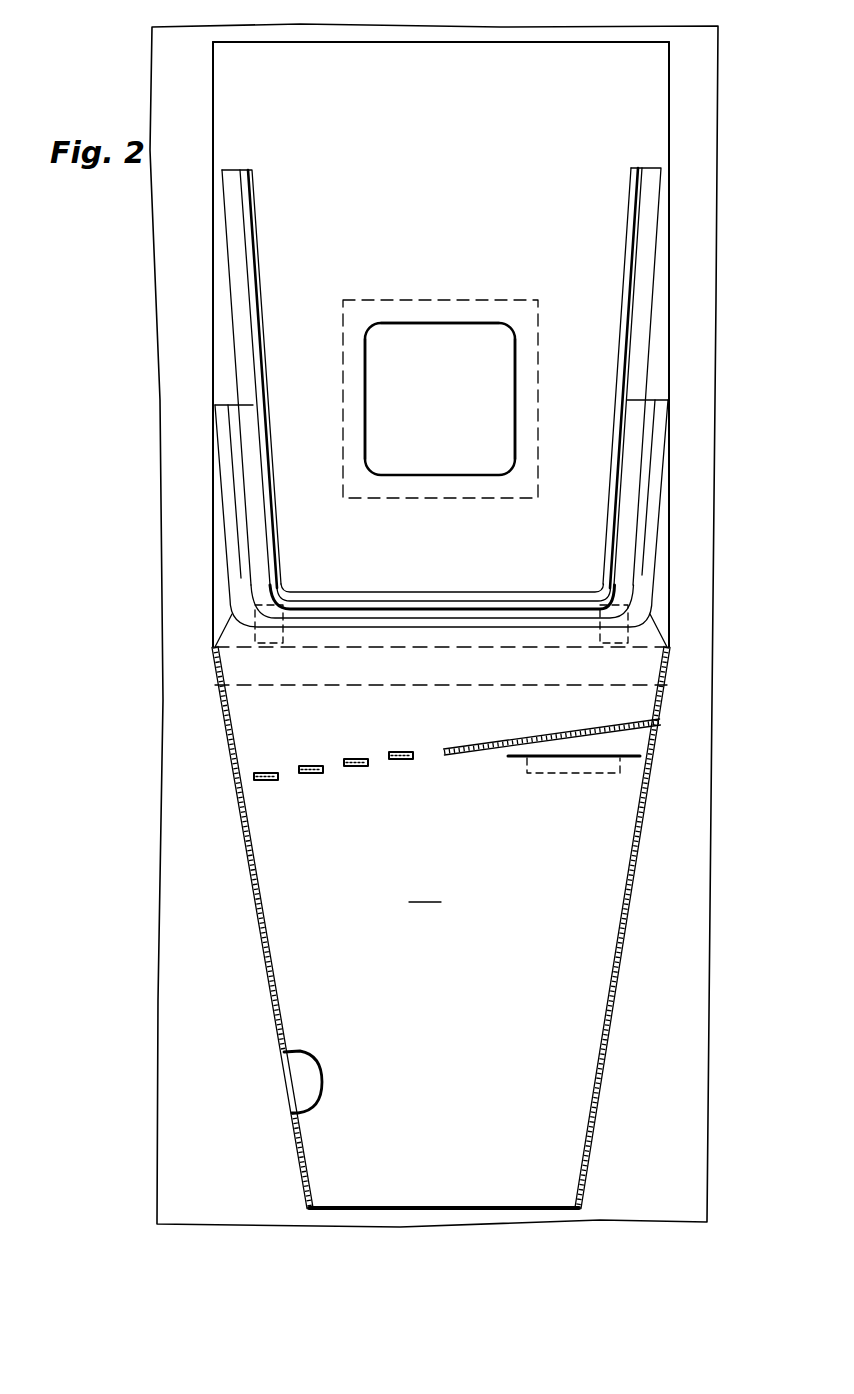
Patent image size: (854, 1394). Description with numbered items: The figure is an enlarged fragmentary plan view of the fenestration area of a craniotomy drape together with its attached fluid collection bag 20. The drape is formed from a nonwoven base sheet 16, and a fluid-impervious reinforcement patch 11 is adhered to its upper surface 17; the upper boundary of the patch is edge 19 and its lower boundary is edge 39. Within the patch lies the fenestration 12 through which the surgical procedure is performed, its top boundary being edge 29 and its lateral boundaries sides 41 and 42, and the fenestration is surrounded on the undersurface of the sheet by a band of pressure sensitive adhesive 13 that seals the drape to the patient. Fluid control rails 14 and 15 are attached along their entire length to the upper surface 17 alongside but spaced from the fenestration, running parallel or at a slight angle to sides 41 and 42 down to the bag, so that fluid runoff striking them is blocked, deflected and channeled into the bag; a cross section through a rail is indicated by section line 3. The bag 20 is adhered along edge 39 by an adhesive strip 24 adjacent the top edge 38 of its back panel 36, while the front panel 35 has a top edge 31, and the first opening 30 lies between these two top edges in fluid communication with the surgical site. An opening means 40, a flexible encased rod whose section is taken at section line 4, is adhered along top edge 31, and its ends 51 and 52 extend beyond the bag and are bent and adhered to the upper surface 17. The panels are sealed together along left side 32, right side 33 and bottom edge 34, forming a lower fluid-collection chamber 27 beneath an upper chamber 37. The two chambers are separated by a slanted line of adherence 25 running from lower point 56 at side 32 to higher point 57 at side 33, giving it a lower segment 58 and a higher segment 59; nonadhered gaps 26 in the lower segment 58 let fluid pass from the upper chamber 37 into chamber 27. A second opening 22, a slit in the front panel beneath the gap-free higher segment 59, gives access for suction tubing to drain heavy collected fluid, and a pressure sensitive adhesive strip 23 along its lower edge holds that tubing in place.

The section line 3- 3 is at (182, 232).
The section line 4- 4 is at (357, 585).
The reinforcement patch 11 is at (645, 108).
The fenestration 12 is at (481, 338).
The pressure sensitive adhesive 13 is at (393, 305).
The fluid control rail 14 is at (258, 278).
The fluid control rail 15 is at (629, 214).
The base sheet 16 is at (683, 1156).
The upper surface 17 is at (594, 96).
The edge 19 is at (320, 42).
The fluid collection bag 20 is at (456, 932).
The second opening 22 is at (520, 762).
The pressure sensitive adhesive strip 23 is at (585, 775).
The adhesive strip 24 is at (394, 673).
The line of adherence 25 is at (552, 723).
The nonadhered gaps 26 is at (340, 780).
The lower fluid-collection chamber 27 is at (330, 1155).
The edge 29 is at (416, 323).
The first opening 30 is at (541, 576).
The top edge 31 is at (479, 606).
The left side 32 is at (255, 886).
The right side 33 is at (629, 886).
The bottom edge 34 is at (348, 1210).
The front panel 35 is at (425, 890).
The back panel 36 is at (305, 1080).
The upper chamber 37 is at (246, 747).
The top edge 38 is at (432, 648).
The edge 39 is at (289, 686).
The opening means 40 is at (430, 600).
The side 41 is at (366, 427).
The side 42 is at (514, 431).
The end 51 is at (250, 424).
The end 52 is at (640, 393).
The point 56 is at (238, 780).
The point 57 is at (661, 722).
The lower segment 58 is at (347, 763).
The higher segment 59 is at (578, 736).